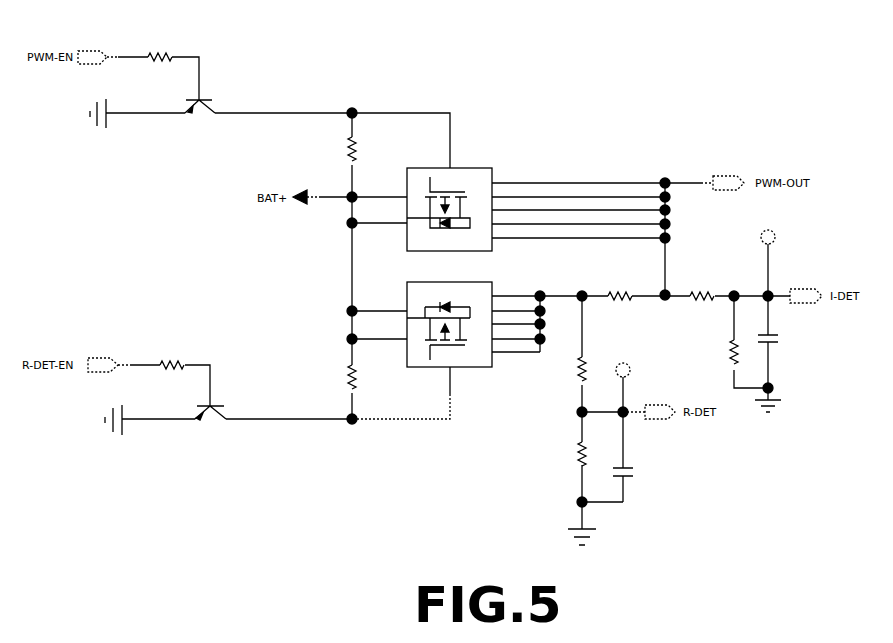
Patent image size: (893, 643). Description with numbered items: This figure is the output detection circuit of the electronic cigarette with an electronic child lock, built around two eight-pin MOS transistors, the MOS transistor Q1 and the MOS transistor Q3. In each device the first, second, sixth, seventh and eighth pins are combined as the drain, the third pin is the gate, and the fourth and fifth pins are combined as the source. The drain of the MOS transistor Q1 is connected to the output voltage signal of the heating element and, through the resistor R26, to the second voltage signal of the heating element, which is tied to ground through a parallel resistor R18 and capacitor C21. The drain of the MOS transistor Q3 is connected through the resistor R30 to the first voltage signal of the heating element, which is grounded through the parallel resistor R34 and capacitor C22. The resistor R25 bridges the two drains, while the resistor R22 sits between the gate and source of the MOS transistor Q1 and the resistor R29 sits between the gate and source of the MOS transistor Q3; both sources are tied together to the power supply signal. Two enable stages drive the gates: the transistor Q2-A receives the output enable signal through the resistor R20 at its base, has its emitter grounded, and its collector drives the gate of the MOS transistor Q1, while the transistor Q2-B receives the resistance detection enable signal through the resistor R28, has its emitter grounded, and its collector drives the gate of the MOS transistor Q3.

The resistor R20 is at (160, 49).
The transistor Q2-A is at (201, 120).
The resistor R22 is at (340, 150).
The MOS transistor Q1 is at (449, 202).
The resistor R28 is at (173, 355).
The transistor Q2-B is at (208, 422).
The resistor R29 is at (340, 380).
The MOS transistor Q3 is at (449, 337).
The resistor R25 is at (621, 306).
The resistor R26 is at (703, 306).
The resistor R18 is at (720, 354).
The capacitor C21 is at (782, 342).
The resistor R30 is at (568, 369).
The resistor R34 is at (570, 454).
The capacitor C22 is at (636, 457).